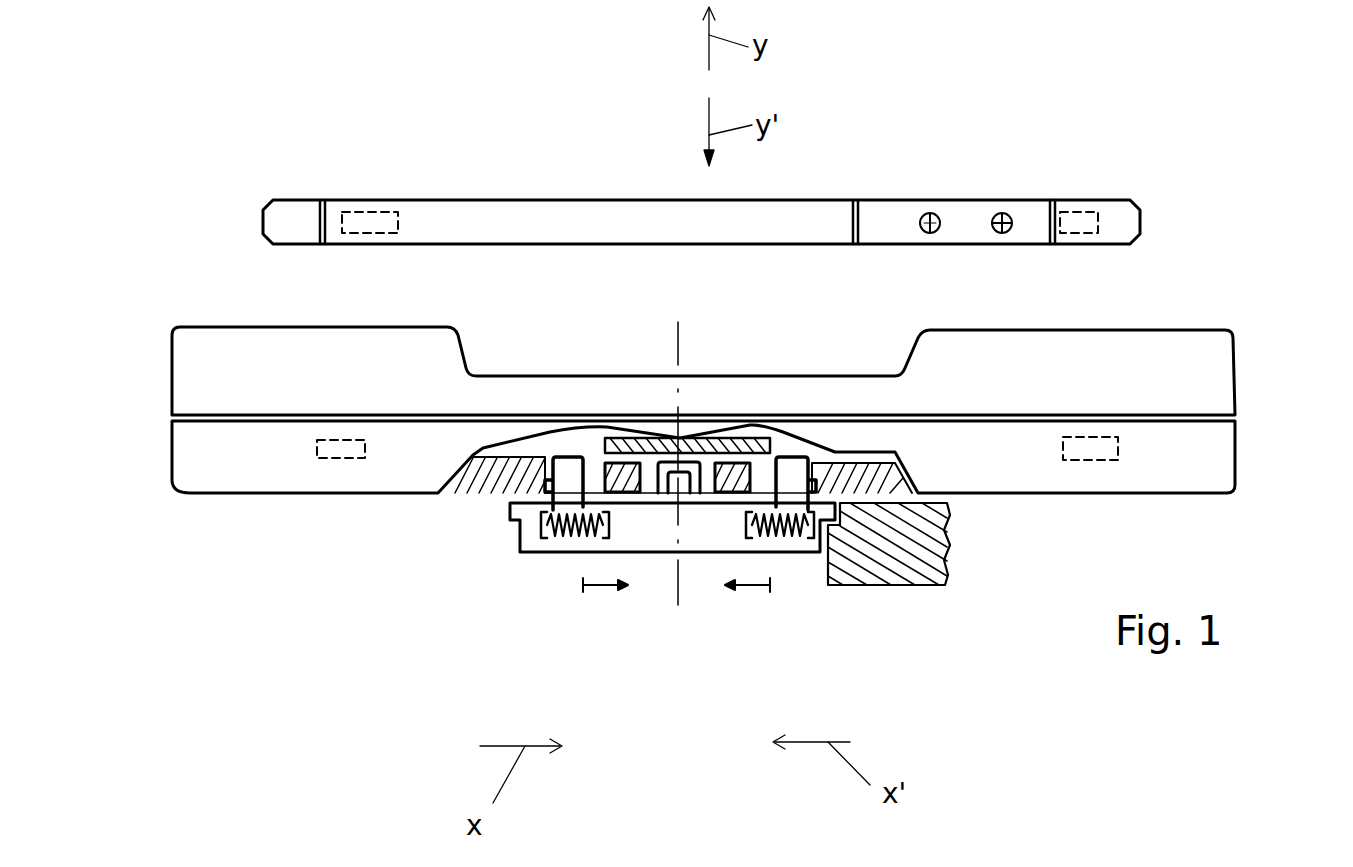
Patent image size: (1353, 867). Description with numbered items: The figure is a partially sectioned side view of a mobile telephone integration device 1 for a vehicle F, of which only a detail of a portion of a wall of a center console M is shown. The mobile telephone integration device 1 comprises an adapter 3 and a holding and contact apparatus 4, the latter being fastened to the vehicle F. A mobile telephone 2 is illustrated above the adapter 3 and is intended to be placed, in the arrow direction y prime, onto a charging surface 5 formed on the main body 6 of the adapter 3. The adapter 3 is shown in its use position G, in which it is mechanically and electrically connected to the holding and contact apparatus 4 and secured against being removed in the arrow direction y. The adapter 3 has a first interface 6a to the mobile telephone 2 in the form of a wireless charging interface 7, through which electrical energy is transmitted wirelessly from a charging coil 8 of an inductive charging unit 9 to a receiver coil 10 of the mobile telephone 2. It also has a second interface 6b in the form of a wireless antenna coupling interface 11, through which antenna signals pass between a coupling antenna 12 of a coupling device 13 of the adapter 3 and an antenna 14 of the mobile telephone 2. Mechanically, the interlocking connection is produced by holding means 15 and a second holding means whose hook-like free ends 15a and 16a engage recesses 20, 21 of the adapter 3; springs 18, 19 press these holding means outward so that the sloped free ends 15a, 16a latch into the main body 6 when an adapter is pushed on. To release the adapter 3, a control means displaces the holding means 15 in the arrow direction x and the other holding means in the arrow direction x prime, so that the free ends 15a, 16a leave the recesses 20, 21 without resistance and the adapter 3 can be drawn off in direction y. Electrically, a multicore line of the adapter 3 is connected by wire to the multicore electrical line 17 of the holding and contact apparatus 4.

The mobile telephone integration device 1 is at (1200, 243).
The mobile telephone 2 is at (1098, 172).
The adapter 3 is at (1180, 362).
The holding and contact apparatus 4 is at (692, 533).
The charging surface 5 is at (853, 367).
The main body 6 is at (1190, 468).
The first interface 6a is at (328, 445).
The wireless charging interface 7 is at (307, 525).
The charging coil 8 is at (307, 525).
The inductive charging unit 9 is at (307, 525).
The second interface 6b is at (1080, 447).
The wireless antenna coupling interface 11 is at (1100, 511).
The coupling antenna 12 is at (1100, 511).
The coupling device 13 is at (1100, 511).
The receiver coil 10 is at (372, 220).
The antenna 14 is at (1097, 217).
The holding means 15 is at (573, 448).
The hook-like free end 15a is at (568, 452).
The hook-like free end 16a is at (800, 465).
The multicore electrical line 17 is at (672, 503).
The spring 18 is at (572, 535).
The spring 19 is at (808, 552).
The recess 20 is at (595, 490).
The recess 21 is at (757, 455).
The vehicle F is at (913, 572).
The center console M is at (912, 548).
The use position G is at (1210, 287).